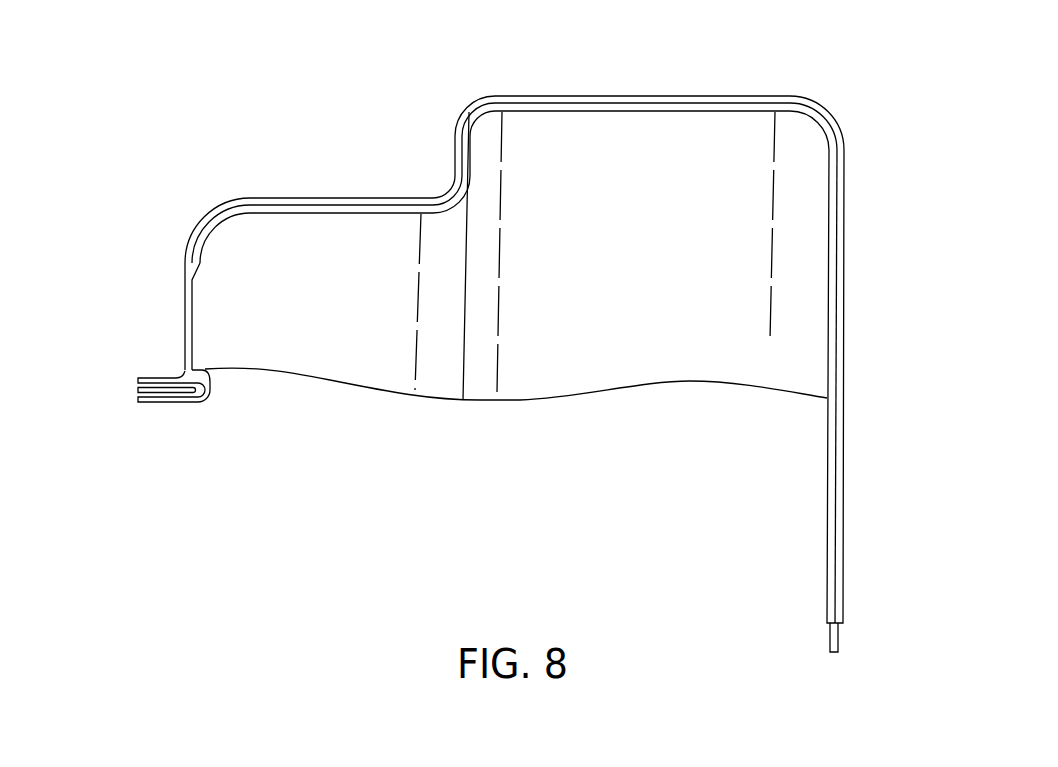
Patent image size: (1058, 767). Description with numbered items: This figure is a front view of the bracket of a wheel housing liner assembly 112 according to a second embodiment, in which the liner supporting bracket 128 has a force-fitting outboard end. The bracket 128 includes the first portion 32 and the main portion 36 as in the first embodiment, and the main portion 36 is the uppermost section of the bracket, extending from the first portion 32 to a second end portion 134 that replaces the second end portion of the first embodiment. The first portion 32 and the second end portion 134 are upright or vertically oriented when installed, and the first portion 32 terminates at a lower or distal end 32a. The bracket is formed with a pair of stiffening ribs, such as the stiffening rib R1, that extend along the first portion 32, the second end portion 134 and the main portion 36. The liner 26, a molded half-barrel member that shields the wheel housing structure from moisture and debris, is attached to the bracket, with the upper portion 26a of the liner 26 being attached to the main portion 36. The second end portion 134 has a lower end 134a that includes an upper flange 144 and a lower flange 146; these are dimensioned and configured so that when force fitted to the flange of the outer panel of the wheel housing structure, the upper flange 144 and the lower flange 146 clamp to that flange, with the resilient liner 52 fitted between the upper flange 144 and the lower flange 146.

The wheel housing liner assembly 112 is at (638, 119).
The main portion 36 is at (590, 94).
The liner supporting bracket 128 is at (644, 102).
The upper portion of the liner 26a is at (697, 148).
The liner 26 is at (666, 330).
The first portion 32 is at (845, 217).
The distal end 32a is at (834, 652).
The second end portion 134 is at (198, 265).
The lower end 134a is at (170, 375).
The upper flange 144 is at (146, 378).
The lower flange 146 is at (150, 404).
The resilient liner 52 is at (175, 396).
The stiffening rib R1 is at (321, 199).